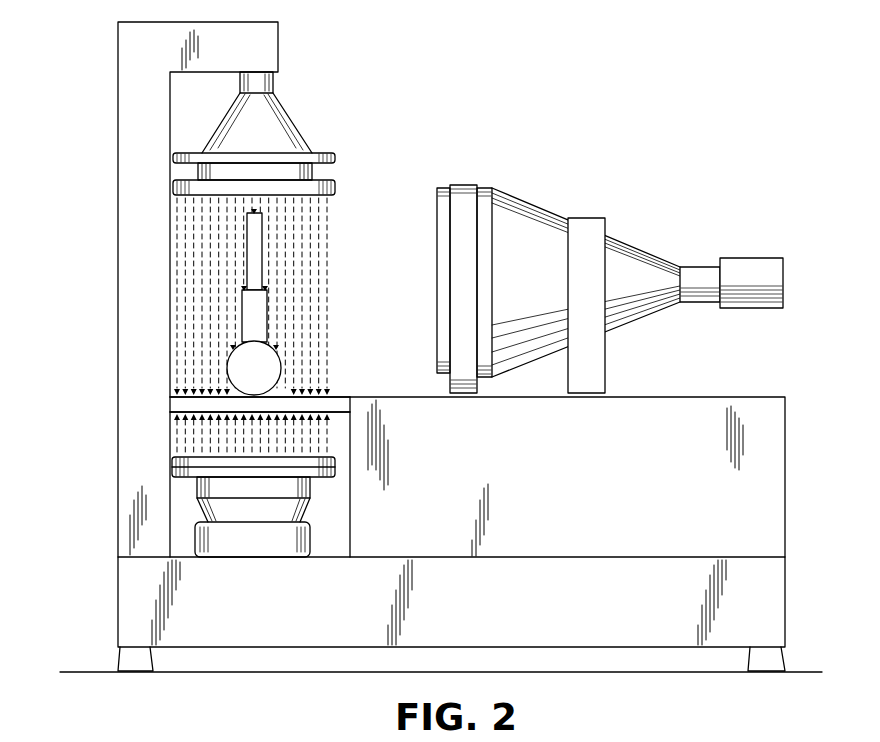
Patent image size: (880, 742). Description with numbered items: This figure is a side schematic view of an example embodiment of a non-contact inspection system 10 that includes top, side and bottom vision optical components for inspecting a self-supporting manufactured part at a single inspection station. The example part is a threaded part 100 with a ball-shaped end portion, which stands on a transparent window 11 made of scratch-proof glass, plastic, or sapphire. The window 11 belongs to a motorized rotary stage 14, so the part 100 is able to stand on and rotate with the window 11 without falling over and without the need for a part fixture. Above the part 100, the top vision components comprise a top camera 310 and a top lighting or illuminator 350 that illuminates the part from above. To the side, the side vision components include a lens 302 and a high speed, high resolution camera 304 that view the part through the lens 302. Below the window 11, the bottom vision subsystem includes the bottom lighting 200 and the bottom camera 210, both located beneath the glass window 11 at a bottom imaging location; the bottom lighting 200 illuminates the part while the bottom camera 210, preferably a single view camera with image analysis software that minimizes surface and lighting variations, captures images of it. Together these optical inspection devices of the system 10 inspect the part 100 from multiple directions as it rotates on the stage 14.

The system 10 is at (685, 108).
The transparent window 11 is at (318, 395).
The motorized rotary stage 14 is at (340, 390).
The threaded part 100 is at (268, 322).
The bottom lighting 200 is at (172, 462).
The bottom camera 210 is at (305, 512).
The lens 302 is at (493, 185).
The camera 304 is at (753, 250).
The top camera 310 is at (292, 123).
The top lighting 350 is at (345, 187).